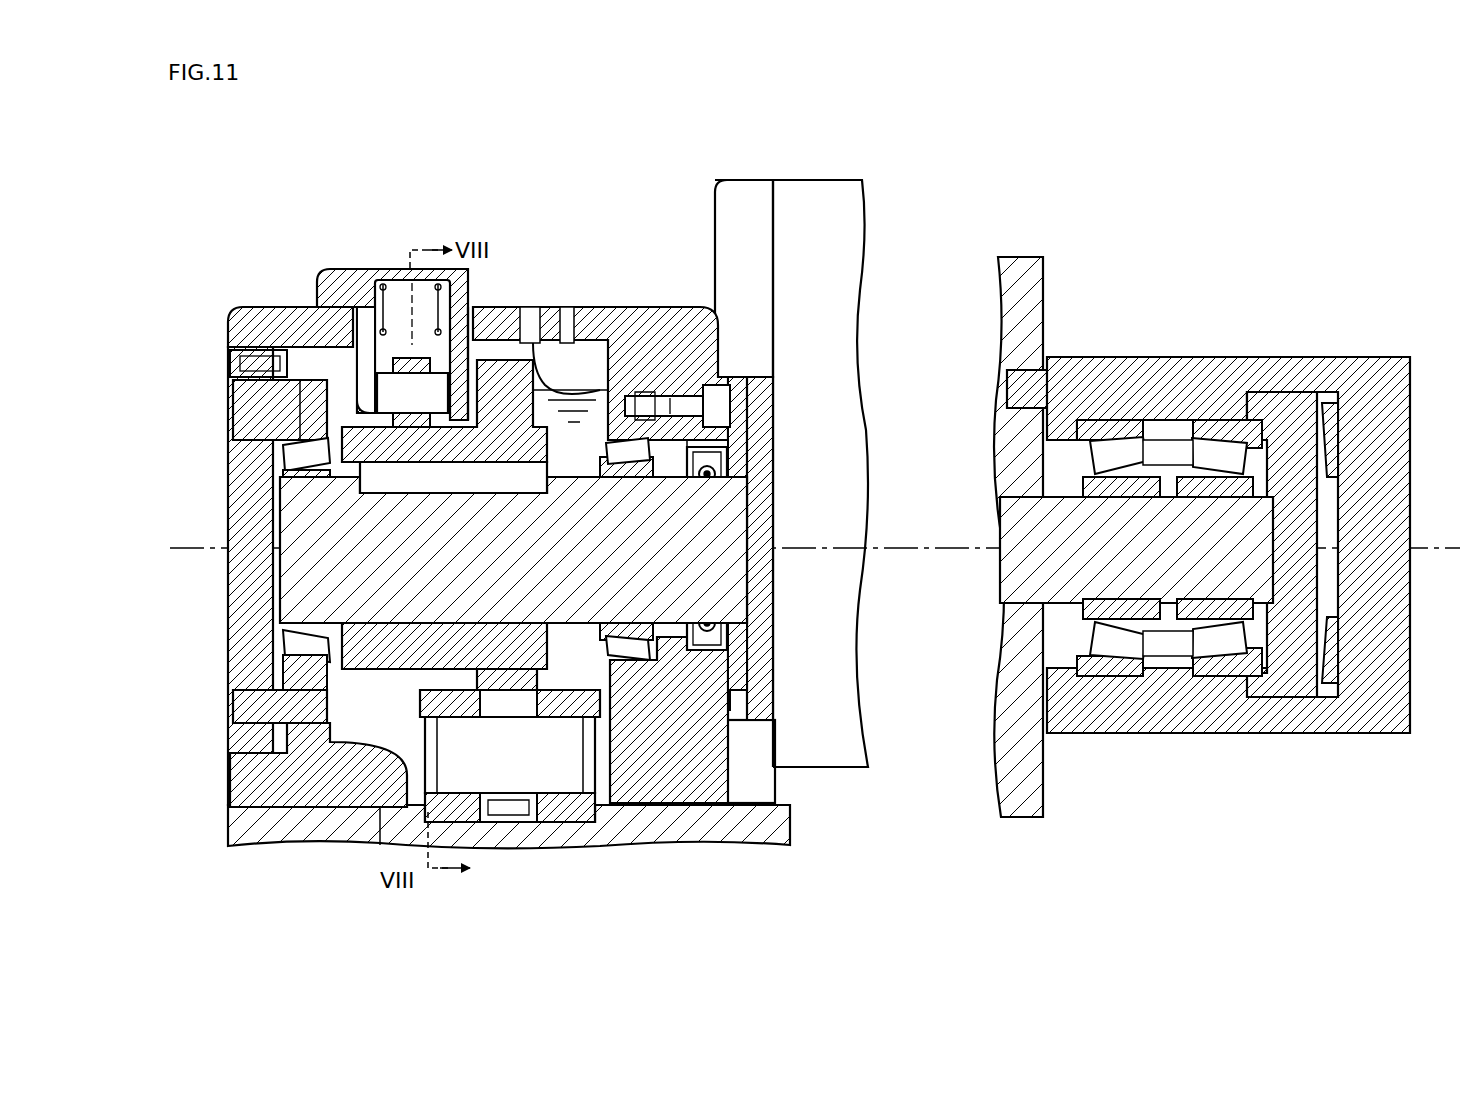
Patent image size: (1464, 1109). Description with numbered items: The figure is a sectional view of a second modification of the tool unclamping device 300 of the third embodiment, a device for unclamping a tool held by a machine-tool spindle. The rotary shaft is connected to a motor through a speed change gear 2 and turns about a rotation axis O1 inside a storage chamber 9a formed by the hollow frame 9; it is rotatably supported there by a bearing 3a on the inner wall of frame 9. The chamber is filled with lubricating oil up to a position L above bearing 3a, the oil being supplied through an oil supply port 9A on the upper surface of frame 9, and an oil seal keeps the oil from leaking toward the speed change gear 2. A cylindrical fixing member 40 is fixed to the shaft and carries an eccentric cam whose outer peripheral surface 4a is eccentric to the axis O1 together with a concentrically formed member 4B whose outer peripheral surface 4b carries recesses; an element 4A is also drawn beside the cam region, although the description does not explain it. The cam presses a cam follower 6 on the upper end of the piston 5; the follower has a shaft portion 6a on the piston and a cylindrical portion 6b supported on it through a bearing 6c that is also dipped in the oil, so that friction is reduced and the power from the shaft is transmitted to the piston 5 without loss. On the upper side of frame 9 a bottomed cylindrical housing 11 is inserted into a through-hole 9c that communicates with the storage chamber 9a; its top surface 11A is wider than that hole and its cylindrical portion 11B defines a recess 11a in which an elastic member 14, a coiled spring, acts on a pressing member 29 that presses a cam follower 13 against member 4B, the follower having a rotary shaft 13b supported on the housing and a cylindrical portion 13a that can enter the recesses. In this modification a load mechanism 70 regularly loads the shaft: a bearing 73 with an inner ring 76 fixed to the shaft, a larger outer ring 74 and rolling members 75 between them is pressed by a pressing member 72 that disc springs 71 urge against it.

The tool unclamping device 300 is at (614, 160).
The speed change gear 2 is at (1025, 303).
The bearing 3a is at (300, 660).
The outer peripheral surface 4a is at (524, 340).
The washer 4A is at (568, 340).
The outer peripheral surface 4b is at (290, 415).
The member 4B is at (400, 690).
The piston 5 is at (600, 820).
The cam follower 6 is at (510, 815).
The shaft portion 6a is at (470, 760).
The cylindrical portion 6b is at (601, 906).
The bearing 6c is at (545, 715).
The frame 9 is at (250, 494).
The storage chamber 9a is at (690, 385).
The oil supply port 9A is at (538, 377).
The through-hole 9c is at (250, 322).
The housing 11 is at (495, 290).
The top surface 11A is at (355, 290).
The recess 11a is at (365, 320).
The cylindrical portion 11B is at (345, 393).
The cam follower 13 is at (455, 218).
The cylindrical portion 13a is at (418, 356).
The rotary shaft 13b is at (406, 385).
The elastic member 14 is at (368, 290).
The pressing member 29 is at (275, 352).
The fixing member 40 is at (300, 455).
The position L is at (582, 388).
The rotation axis O1 is at (190, 535).
The load mechanism 70 is at (1278, 380).
The disc springs 71 is at (1333, 444).
The pressing member 72 is at (1300, 496).
The bearing 73 is at (1184, 620).
The ring 74 is at (1220, 640).
The rolling members 75 is at (1250, 668).
The ring 76 is at (1170, 628).